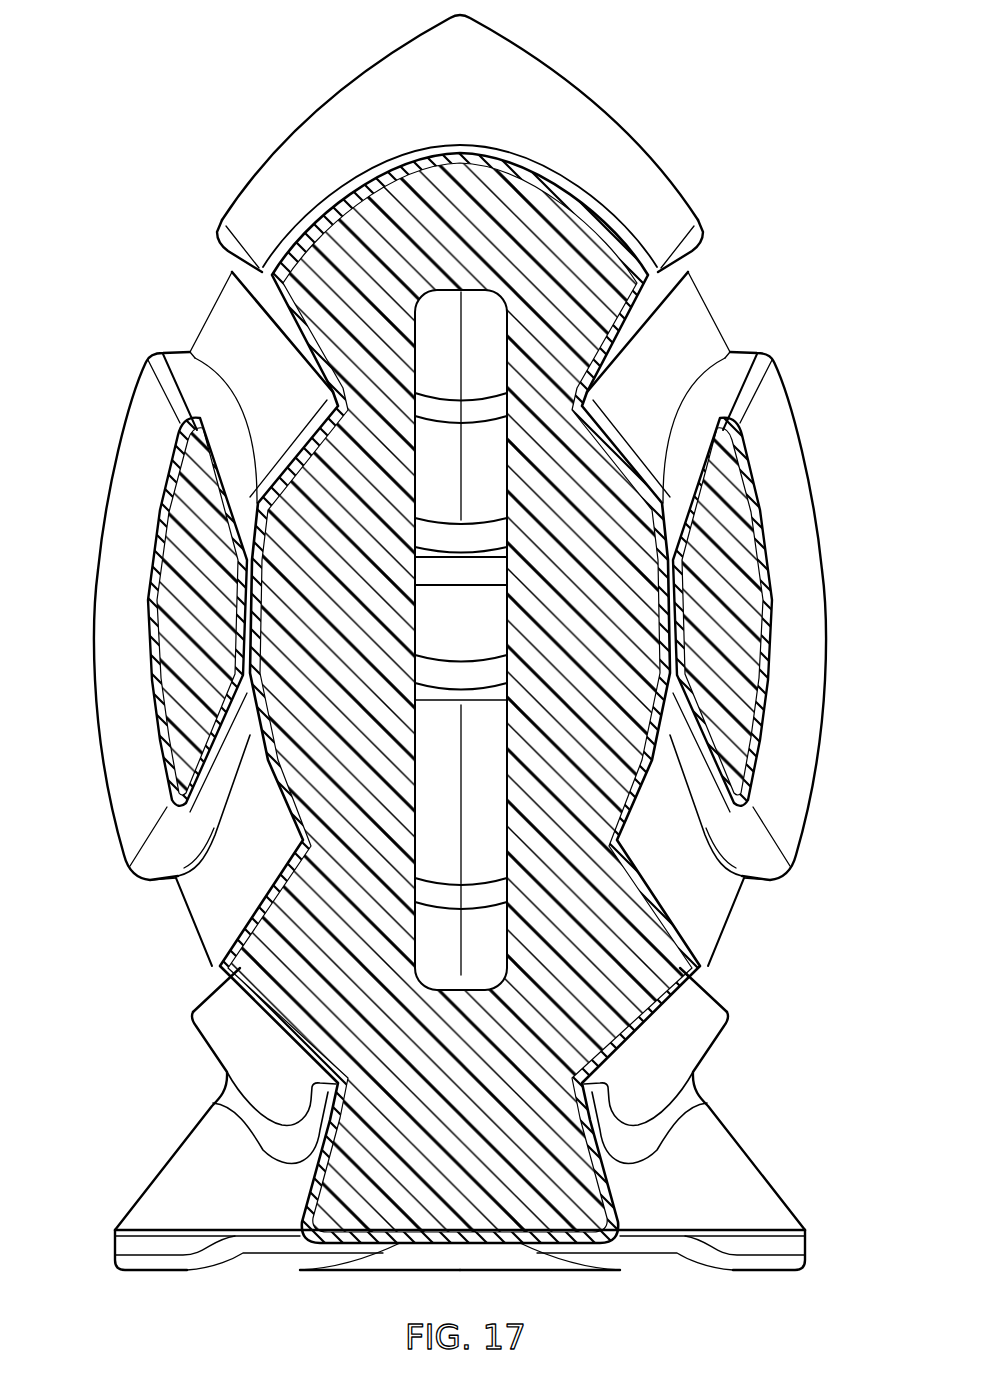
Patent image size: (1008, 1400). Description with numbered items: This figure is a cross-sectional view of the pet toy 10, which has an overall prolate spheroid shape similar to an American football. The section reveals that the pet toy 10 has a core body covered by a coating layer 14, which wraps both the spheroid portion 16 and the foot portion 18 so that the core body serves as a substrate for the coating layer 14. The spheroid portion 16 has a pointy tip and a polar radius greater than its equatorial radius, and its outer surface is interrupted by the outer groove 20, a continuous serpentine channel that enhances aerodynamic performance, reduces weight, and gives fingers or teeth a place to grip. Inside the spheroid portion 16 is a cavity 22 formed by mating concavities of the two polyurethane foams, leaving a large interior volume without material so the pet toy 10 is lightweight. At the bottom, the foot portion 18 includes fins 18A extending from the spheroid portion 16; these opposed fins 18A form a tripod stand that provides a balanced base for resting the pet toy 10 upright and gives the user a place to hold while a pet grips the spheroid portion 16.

The pet toy 10 is at (258, 125).
The coating layer 14 is at (750, 462).
The spheroid portion 16 is at (656, 162).
The foot portion 18 is at (143, 1175).
The fins 18A is at (167, 1272).
The outer groove 20 is at (210, 322).
The cavity 22 is at (427, 607).